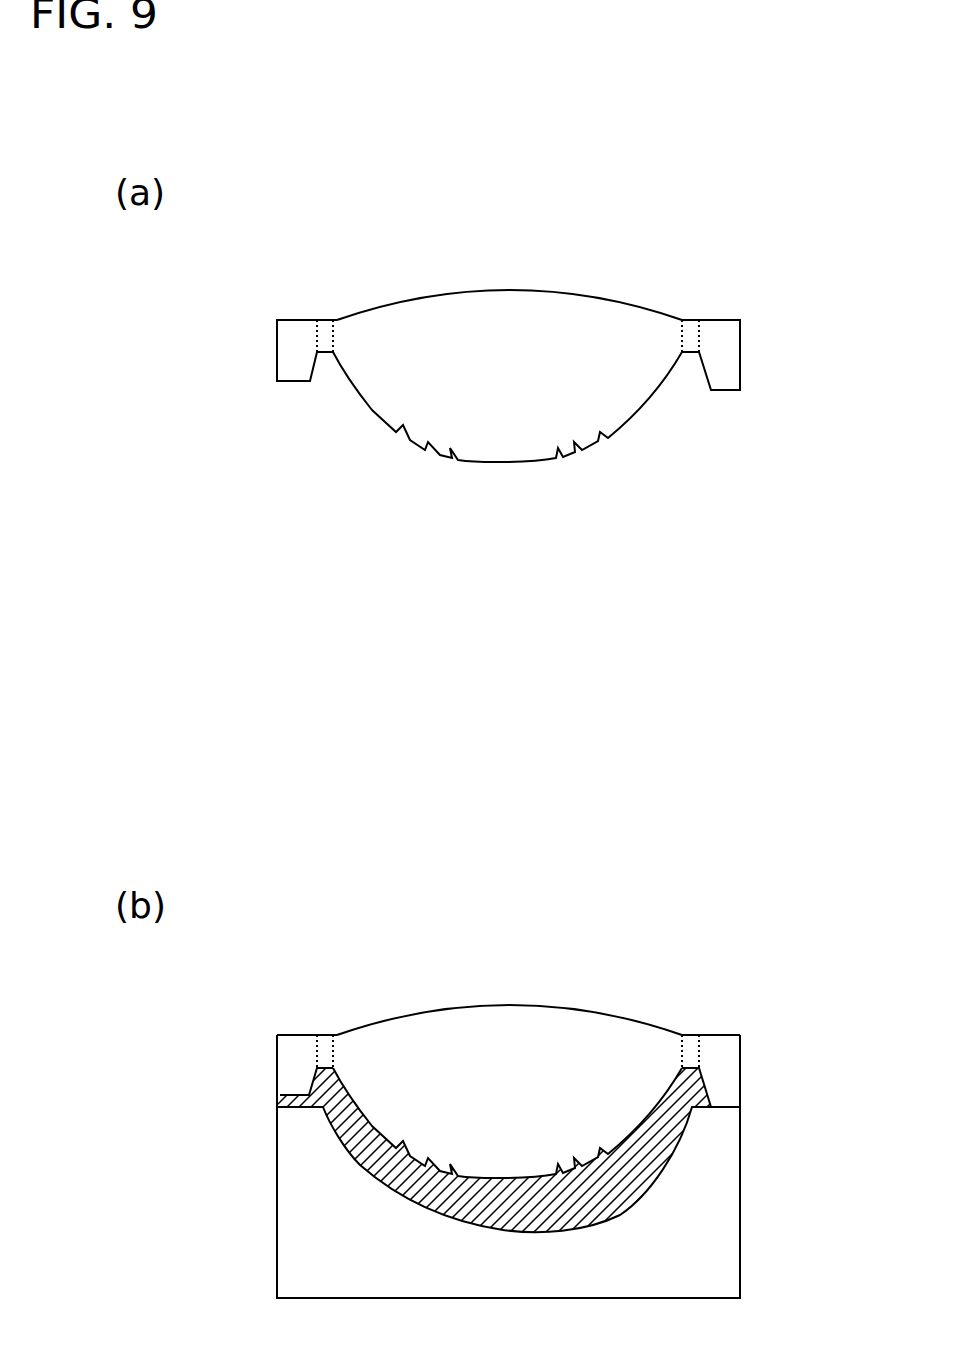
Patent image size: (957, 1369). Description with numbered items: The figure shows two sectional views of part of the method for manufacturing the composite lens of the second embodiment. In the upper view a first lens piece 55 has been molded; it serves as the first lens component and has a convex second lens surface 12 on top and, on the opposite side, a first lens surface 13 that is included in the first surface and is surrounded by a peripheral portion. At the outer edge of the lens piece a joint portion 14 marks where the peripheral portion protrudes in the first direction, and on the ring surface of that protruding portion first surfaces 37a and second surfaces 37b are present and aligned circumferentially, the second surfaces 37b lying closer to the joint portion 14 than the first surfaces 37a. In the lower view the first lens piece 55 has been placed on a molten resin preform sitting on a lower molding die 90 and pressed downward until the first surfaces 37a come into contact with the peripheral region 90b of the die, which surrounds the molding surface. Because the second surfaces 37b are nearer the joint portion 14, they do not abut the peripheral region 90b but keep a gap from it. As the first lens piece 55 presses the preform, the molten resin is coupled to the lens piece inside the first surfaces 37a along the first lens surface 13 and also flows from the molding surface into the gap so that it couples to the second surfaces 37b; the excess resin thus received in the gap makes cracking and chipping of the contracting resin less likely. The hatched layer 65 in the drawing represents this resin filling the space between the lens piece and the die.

The second lens surface 12 is at (390, 302).
The first lens surface 13 is at (370, 408).
The joint portion 14 is at (334, 353).
The first surfaces 37a is at (727, 390).
The second surfaces 37b is at (297, 381).
The first lens piece 55 is at (575, 269).
The adhesive layer 65 is at (596, 1192).
The lower molding die 90 is at (727, 1199).
The peripheral region 90b is at (286, 1105).